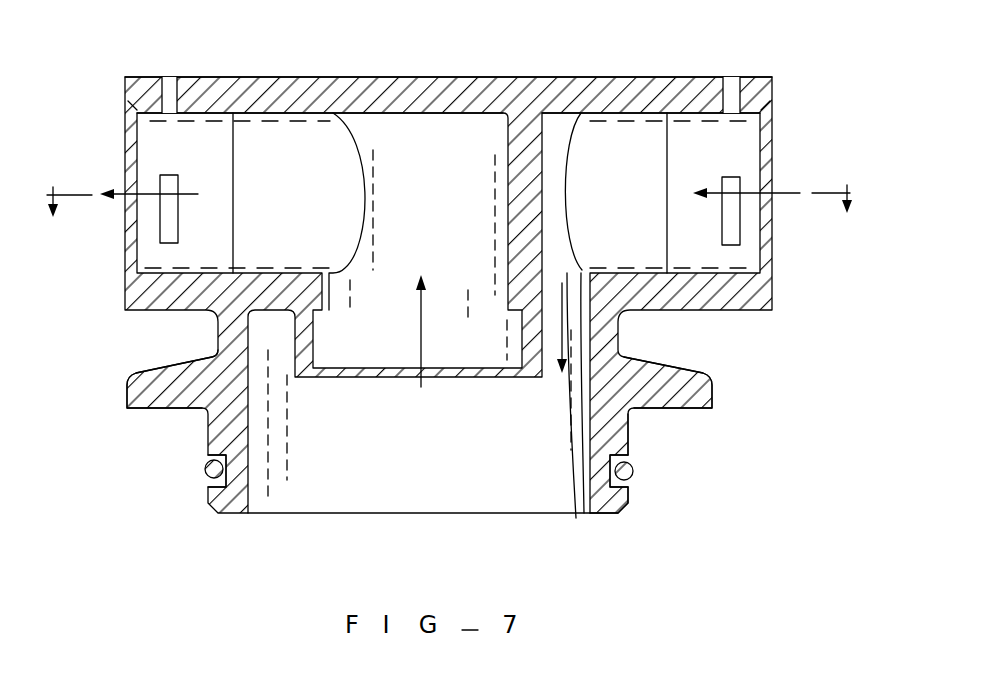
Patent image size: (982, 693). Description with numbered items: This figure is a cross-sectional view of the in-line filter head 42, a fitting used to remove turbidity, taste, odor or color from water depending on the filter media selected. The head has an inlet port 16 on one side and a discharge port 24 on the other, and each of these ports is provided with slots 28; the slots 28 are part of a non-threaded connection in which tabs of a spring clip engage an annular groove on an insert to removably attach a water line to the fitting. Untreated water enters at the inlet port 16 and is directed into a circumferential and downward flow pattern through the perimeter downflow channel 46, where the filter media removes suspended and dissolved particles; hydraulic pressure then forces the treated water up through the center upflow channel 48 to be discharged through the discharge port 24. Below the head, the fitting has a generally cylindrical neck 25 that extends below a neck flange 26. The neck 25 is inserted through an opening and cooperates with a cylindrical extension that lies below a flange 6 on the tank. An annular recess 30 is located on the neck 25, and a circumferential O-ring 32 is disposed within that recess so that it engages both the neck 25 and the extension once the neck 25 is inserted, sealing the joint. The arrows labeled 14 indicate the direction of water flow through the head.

The in-line filter head 42 is at (590, 42).
The slots 28 is at (167, 77).
The discharge port 24 is at (125, 130).
The inlet port 16 is at (773, 143).
The fluid flow arrows 14 is at (142, 192).
The flange 6 is at (448, 215).
The neck flange 26 is at (150, 410).
The circumferential O-ring 32 is at (203, 472).
The annular recess 30 is at (233, 460).
The center upflow channel 48 is at (470, 290).
The perimeter downflow channel 46 is at (581, 470).
The neck 25 is at (612, 503).